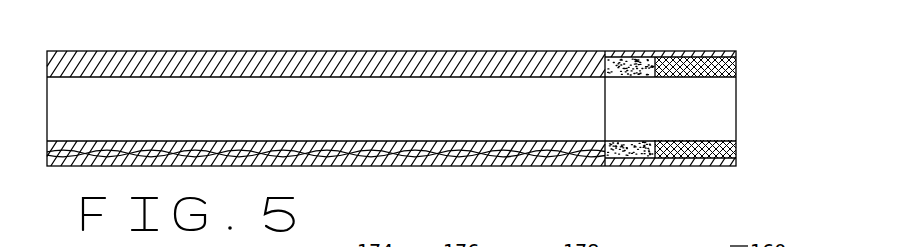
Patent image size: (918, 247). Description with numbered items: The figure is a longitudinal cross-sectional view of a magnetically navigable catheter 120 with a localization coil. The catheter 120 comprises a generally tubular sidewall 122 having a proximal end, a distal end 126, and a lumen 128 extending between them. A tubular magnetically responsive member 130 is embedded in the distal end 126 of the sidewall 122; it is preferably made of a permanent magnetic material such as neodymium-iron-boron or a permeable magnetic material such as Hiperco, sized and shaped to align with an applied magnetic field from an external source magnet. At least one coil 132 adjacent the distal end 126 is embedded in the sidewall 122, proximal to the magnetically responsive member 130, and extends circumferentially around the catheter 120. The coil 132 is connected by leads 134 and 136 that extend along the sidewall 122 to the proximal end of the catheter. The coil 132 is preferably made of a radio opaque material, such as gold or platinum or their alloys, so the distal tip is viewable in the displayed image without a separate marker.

The magnetically navigable catheter 120 is at (724, 36).
The sidewall 122 is at (588, 160).
The distal end 126 is at (745, 114).
The lumen 128 is at (376, 118).
The magnetically responsive member 130 is at (737, 146).
The coil 132 is at (630, 140).
The lead 134 is at (412, 161).
The lead 136 is at (464, 158).